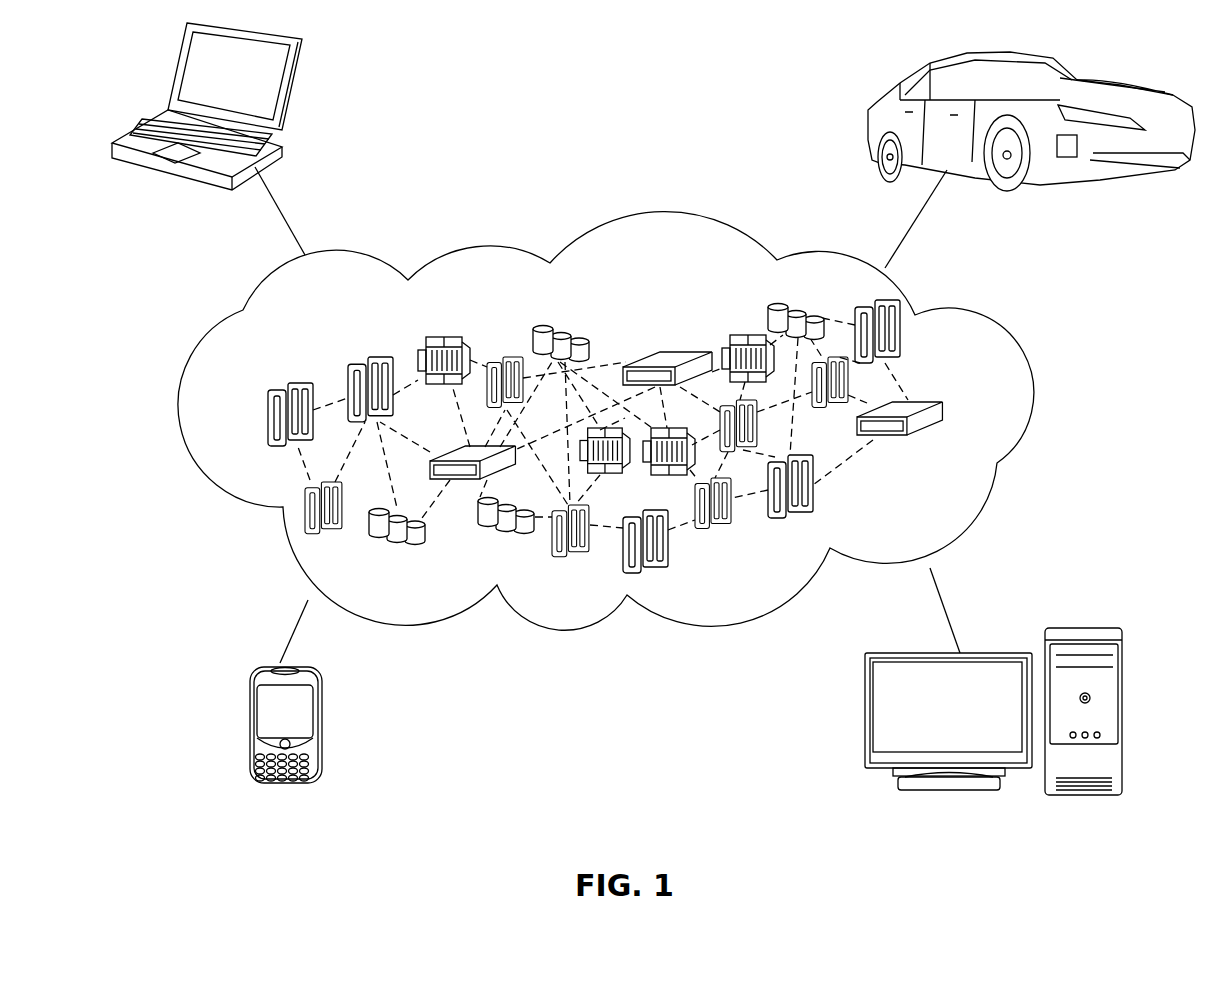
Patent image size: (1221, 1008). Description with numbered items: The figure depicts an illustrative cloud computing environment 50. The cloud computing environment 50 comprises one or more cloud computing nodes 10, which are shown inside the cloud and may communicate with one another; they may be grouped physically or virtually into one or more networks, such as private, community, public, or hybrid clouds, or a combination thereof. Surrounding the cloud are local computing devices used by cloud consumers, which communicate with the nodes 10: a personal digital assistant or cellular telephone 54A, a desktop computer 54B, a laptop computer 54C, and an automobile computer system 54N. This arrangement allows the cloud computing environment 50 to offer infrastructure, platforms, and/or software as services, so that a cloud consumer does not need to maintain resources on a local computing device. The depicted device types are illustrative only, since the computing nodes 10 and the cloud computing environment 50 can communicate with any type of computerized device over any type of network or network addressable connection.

The cloud computing nodes 10 is at (978, 412).
The cloud computing environment 50 is at (1005, 330).
The personal digital assistant (PDA) or cellular telephone 54A is at (250, 730).
The desktop computer 54B is at (1088, 628).
The laptop computer 54C is at (297, 92).
The automobile computer system 54N is at (877, 102).